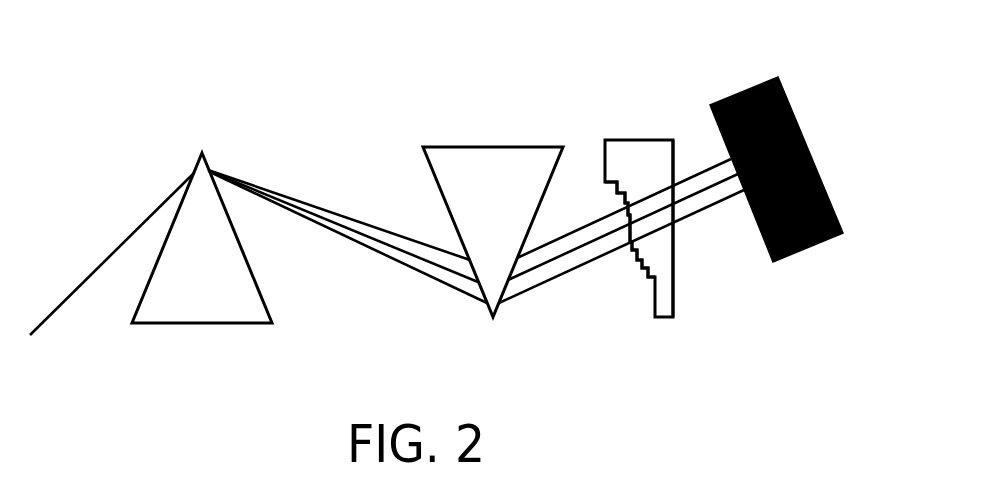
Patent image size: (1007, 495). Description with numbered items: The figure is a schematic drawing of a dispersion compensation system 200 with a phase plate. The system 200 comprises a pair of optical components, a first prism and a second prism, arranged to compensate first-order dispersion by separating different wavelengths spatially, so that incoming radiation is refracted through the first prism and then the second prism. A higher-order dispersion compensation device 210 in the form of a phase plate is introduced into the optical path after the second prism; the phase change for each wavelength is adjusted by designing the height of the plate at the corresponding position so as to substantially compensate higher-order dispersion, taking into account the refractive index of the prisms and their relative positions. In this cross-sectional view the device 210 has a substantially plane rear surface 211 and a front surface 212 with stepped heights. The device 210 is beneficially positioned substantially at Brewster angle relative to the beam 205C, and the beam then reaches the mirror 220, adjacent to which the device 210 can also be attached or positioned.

The dispersion compensation system 200 is at (178, 76).
The beam 205C is at (553, 280).
The higher-order dispersion compensation device 210 is at (665, 318).
The rear surface 211 is at (672, 160).
The front surface 212 is at (621, 186).
The mirror 220 is at (807, 250).